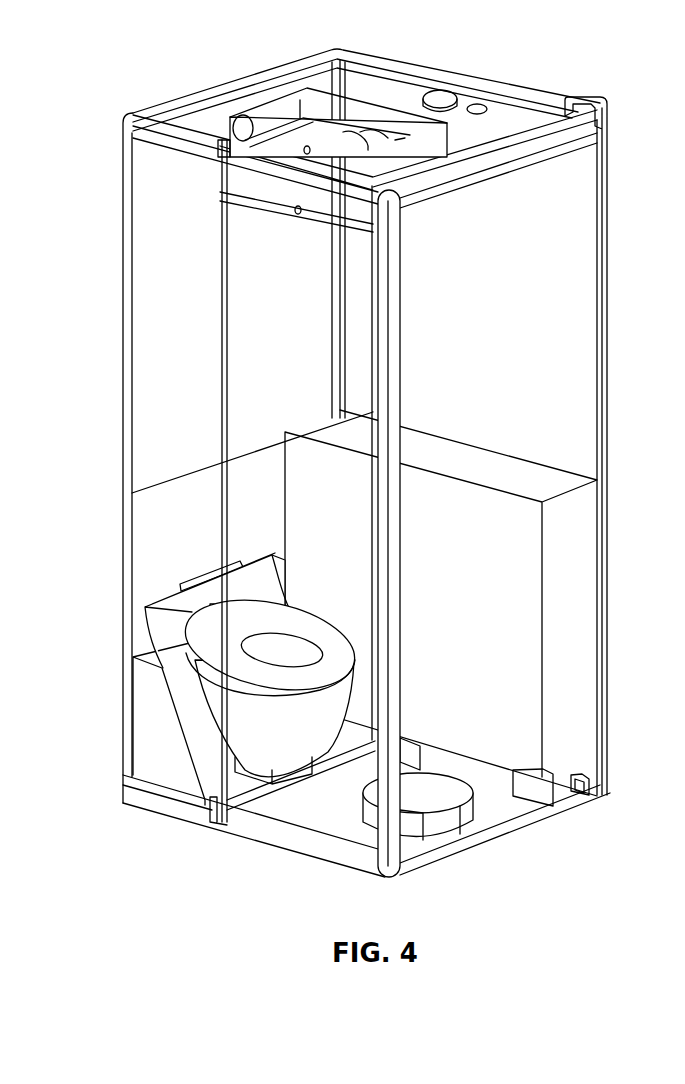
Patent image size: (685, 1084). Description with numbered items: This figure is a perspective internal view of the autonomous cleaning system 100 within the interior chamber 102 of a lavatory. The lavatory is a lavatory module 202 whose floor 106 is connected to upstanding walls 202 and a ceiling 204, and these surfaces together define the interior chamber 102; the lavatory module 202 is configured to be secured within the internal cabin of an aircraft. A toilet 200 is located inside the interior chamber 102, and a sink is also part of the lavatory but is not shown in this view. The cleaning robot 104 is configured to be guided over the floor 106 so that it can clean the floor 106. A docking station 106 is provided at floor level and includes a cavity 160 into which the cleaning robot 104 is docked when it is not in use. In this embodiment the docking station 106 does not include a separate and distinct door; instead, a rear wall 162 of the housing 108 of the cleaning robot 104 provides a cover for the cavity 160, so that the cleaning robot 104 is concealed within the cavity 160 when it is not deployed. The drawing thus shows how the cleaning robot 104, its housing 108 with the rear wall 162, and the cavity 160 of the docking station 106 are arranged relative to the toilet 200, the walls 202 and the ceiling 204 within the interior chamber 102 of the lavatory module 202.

The autonomous cleaning system 100 is at (498, 740).
The interior chamber 102 is at (570, 243).
The cleaning robot 104 is at (486, 802).
The floor 106 is at (345, 840).
The housing 108 is at (427, 799).
The cavity 160 is at (492, 777).
The rear wall 162 is at (413, 823).
The toilet 200 is at (165, 632).
The lavatory module 202 is at (155, 332).
The ceiling 204 is at (512, 135).